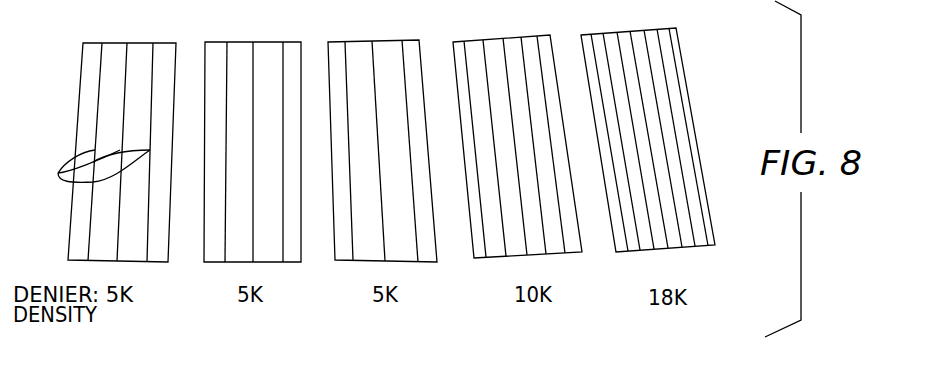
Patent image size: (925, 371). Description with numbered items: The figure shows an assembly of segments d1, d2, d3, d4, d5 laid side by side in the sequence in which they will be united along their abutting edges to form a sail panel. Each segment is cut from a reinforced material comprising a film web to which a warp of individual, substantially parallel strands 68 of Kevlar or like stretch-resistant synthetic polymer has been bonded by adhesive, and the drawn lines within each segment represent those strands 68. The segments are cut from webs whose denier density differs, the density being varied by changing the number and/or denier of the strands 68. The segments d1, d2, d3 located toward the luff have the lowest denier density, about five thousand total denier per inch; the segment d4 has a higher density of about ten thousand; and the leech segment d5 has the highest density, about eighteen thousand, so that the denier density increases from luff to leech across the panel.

The segment d1 is at (92, 46).
The segment d2 is at (239, 43).
The segment d3 is at (370, 43).
The segment d4 is at (517, 36).
The segment d5 is at (685, 78).
The strands 68 is at (58, 173).